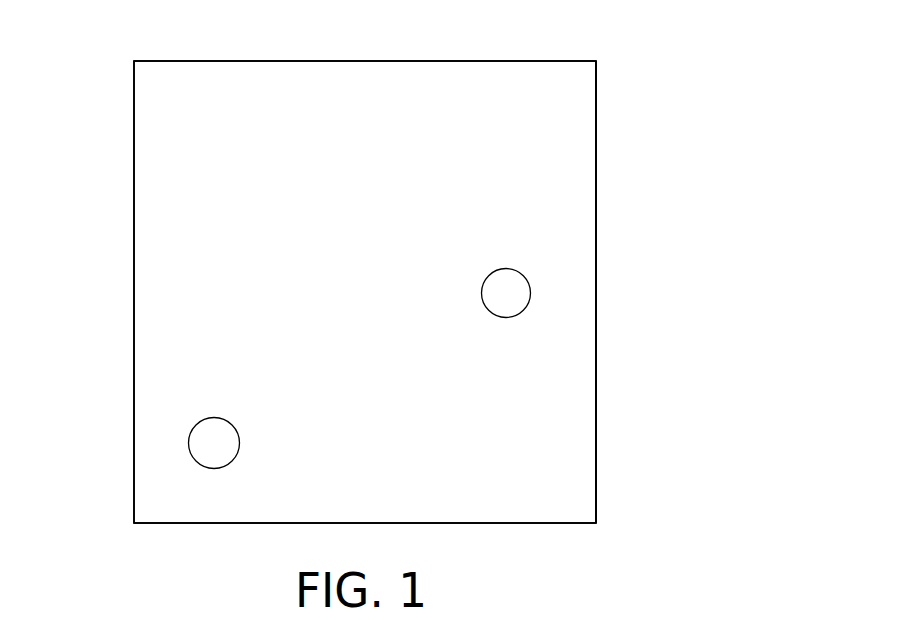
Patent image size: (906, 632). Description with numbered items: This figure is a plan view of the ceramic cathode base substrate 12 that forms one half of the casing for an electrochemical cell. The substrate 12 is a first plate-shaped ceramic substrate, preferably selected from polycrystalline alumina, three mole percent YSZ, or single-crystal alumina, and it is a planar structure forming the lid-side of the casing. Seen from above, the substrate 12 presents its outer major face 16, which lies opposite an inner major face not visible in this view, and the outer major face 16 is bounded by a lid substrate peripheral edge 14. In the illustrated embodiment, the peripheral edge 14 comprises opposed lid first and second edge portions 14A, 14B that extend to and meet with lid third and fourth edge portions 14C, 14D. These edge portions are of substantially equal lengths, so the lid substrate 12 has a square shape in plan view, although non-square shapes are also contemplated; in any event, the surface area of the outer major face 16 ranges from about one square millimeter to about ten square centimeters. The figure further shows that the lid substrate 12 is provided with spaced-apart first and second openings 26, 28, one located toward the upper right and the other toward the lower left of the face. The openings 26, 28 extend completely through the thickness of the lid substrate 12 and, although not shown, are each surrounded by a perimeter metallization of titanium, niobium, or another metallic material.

The ceramic cathode base substrate 12 is at (690, 161).
The lid substrate peripheral edge 14 is at (134, 160).
The lid first edge portion 14A is at (214, 61).
The lid second edge portion 14B is at (532, 523).
The lid third edge portion 14C is at (596, 385).
The lid fourth edge portion 14D is at (134, 507).
The outer major face 16 is at (178, 297).
The first opening 26 is at (530, 293).
The second opening 28 is at (188, 443).